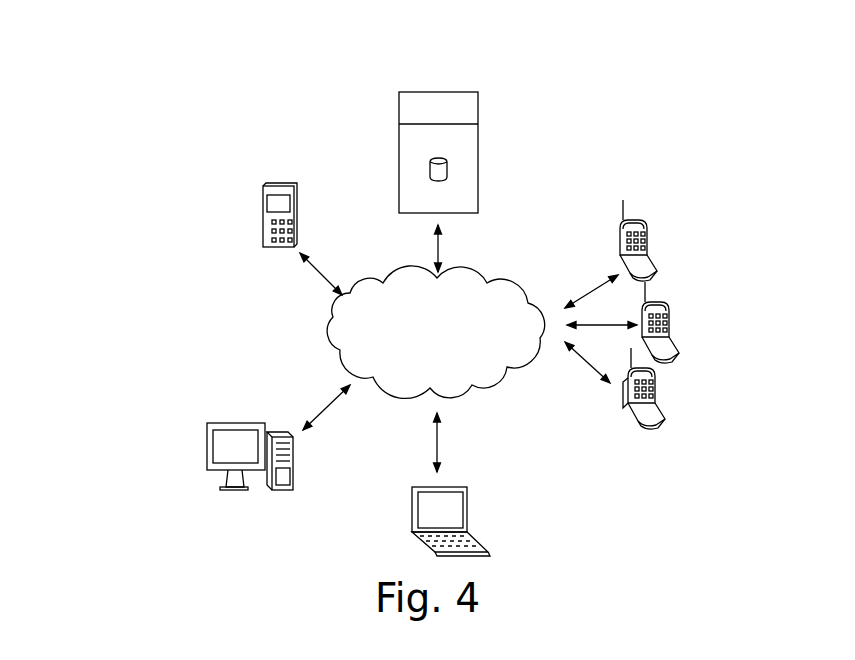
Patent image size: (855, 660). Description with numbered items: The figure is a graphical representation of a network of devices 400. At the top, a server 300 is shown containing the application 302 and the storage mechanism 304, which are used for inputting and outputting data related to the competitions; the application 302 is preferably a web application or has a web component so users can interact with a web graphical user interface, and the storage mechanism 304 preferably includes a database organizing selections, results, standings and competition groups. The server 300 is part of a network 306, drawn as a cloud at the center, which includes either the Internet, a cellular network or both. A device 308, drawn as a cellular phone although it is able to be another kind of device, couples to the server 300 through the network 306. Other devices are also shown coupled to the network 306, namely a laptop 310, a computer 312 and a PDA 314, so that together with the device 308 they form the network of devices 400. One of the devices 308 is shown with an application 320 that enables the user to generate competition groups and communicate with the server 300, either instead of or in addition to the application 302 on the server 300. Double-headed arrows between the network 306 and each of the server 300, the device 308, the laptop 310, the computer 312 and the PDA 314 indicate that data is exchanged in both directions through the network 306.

The network of devices 400 is at (125, 88).
The server 300 is at (593, 162).
The application 302 is at (481, 133).
The storage mechanism 304 is at (453, 168).
The network 306 is at (490, 303).
The device 308 is at (669, 331).
The laptop 310 is at (495, 550).
The computer 312 is at (213, 493).
The PDA 314 is at (255, 183).
The application 320 is at (622, 395).